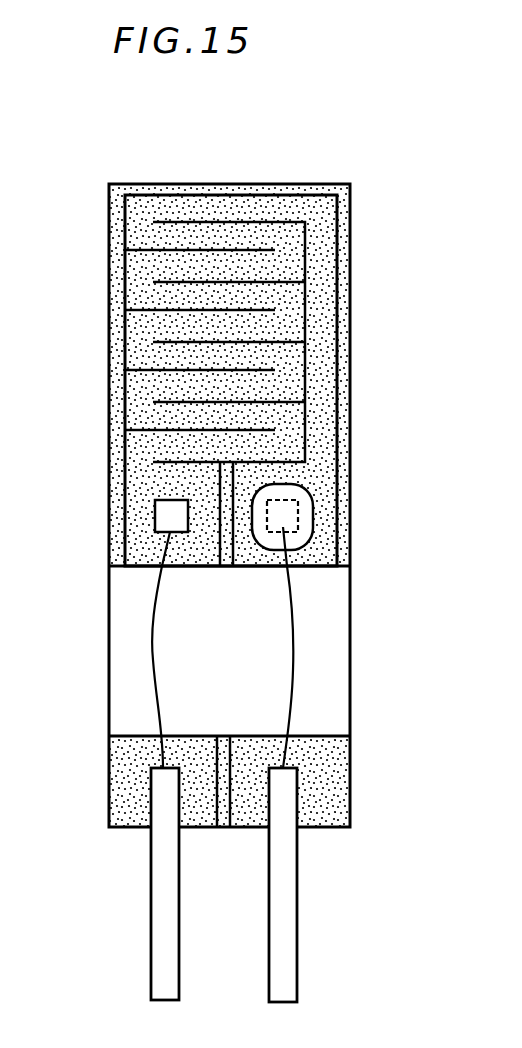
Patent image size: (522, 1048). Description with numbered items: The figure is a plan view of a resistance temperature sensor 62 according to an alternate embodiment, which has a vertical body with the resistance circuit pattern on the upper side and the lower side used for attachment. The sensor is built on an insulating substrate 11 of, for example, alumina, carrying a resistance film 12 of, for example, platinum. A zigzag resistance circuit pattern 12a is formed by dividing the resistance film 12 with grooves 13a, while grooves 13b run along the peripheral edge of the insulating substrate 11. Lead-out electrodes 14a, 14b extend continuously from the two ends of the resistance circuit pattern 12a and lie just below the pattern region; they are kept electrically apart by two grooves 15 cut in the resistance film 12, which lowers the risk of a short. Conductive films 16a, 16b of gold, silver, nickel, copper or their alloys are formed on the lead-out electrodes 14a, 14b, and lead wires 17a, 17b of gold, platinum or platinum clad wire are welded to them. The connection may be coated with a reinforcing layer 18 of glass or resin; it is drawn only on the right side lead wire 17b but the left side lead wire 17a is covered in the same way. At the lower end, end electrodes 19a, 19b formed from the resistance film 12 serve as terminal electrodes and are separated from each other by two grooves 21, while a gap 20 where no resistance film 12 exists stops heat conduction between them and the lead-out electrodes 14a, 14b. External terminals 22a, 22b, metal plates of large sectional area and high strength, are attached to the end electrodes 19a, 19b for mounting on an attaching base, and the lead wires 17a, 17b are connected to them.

The resistance temperature sensor 62 is at (443, 114).
The insulating substrate 11 is at (356, 203).
The resistance film 12 is at (324, 293).
The resistance circuit pattern 12a is at (281, 320).
The grooves 13a is at (166, 221).
The grooves 13b is at (255, 195).
The lead-out electrode 14a is at (135, 480).
The lead-out electrode 14b is at (323, 481).
The grooves 15 is at (217, 541).
The conductive film 16a is at (162, 512).
The conductive film 16b is at (287, 515).
The lead wire 17a is at (153, 662).
The lead wire 17b is at (293, 668).
The reinforcing layer 18 is at (293, 547).
The end electrode 19a is at (120, 782).
The end electrode 19b is at (330, 787).
The gap 20 is at (310, 620).
The grooves 21 is at (232, 773).
The external terminal 22a is at (164, 910).
The external terminal 22b is at (283, 929).